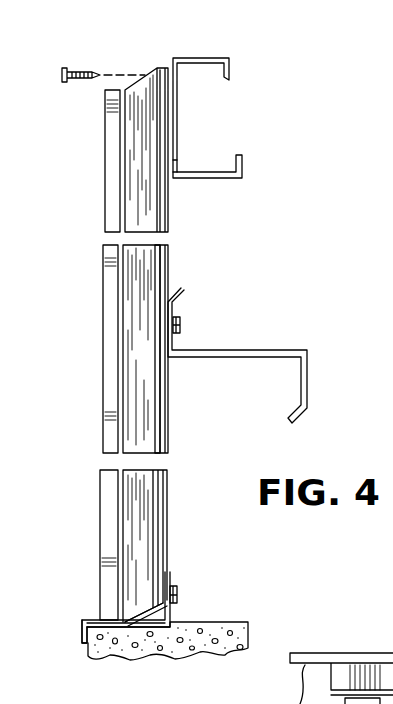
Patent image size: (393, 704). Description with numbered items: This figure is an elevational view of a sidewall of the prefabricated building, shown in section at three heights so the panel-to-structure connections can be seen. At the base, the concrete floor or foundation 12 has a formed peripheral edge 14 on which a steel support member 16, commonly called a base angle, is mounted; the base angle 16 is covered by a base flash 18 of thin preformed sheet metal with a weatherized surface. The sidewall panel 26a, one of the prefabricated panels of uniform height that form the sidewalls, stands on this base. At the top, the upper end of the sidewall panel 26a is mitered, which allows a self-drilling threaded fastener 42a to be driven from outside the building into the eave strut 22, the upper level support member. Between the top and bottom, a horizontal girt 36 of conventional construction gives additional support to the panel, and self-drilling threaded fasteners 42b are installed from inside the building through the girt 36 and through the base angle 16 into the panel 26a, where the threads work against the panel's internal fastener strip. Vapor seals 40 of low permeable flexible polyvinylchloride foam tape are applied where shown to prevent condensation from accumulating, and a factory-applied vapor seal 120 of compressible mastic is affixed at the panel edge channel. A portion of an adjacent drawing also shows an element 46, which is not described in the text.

The concrete floor or foundation 12 is at (165, 650).
The formed peripheral edge 14 is at (128, 637).
The steel support member (base angle) 16 is at (173, 615).
The base flash 18 is at (78, 628).
The eave strut 22 is at (236, 180).
The sidewall panel 26a is at (100, 392).
The horizontal girt 36 is at (309, 372).
The vapor seal 40 is at (177, 165).
The self-drilling threaded fastener 42a is at (78, 83).
The self-drilling threaded fastener 42b is at (185, 326).
The panel 46 is at (392, 640).
The factory-applied vapor seal 120 is at (158, 378).